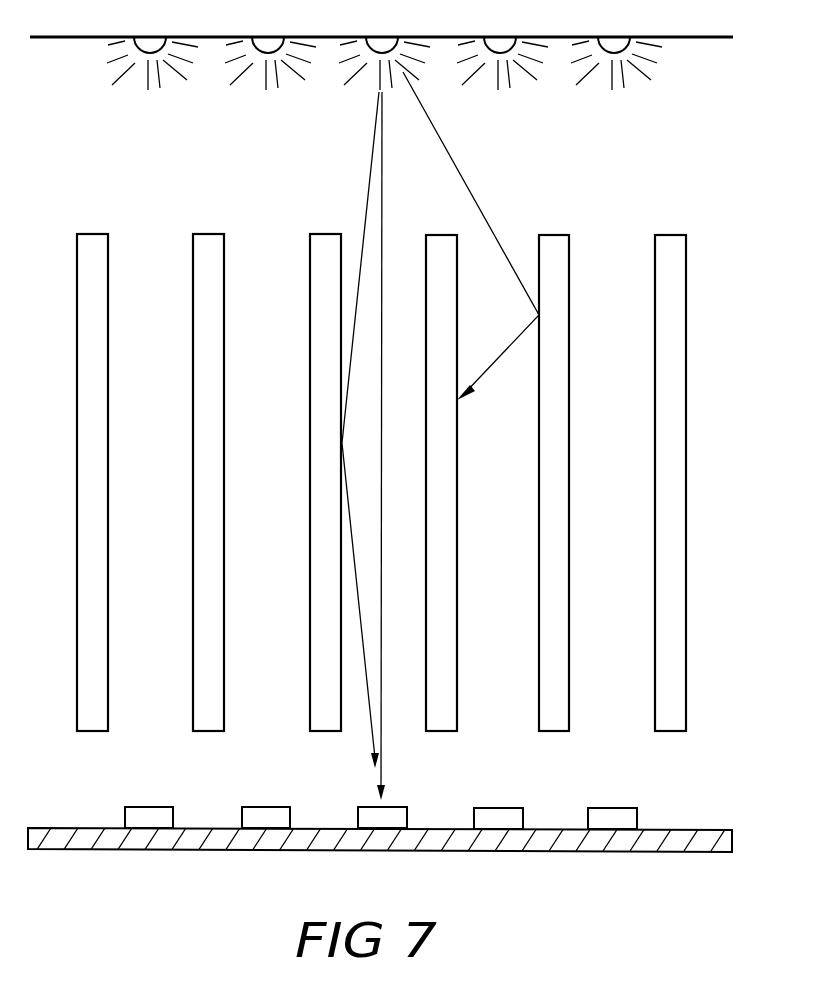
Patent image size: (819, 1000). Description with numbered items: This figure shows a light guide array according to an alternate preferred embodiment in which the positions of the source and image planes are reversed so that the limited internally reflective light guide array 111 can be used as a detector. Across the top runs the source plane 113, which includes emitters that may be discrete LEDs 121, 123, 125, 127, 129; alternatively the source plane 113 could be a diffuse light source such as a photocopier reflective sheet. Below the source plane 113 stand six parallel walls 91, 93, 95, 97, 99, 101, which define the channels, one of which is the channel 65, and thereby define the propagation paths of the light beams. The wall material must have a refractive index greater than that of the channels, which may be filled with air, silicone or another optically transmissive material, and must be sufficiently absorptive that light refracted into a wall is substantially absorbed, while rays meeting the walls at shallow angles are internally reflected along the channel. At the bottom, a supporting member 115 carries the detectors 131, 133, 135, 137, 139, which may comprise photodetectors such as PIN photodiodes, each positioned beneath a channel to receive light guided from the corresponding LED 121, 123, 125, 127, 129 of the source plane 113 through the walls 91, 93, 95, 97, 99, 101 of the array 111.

The channel 65 is at (397, 258).
The wall 91 is at (80, 233).
The wall 93 is at (197, 233).
The wall 95 is at (312, 233).
The wall 97 is at (442, 213).
The wall 99 is at (562, 214).
The wall 101 is at (672, 236).
The limited internally reflective light guide array 111 is at (697, 398).
The source plane 113 is at (703, 38).
The substrate 115 is at (706, 829).
The LED 121 is at (113, 80).
The LED 123 is at (255, 80).
The LED 125 is at (368, 78).
The LED 127 is at (497, 82).
The LED 129 is at (603, 80).
The detector 131 is at (133, 807).
The detector 133 is at (245, 807).
The detector 135 is at (360, 807).
The detector 137 is at (474, 808).
The detector 139 is at (586, 808).